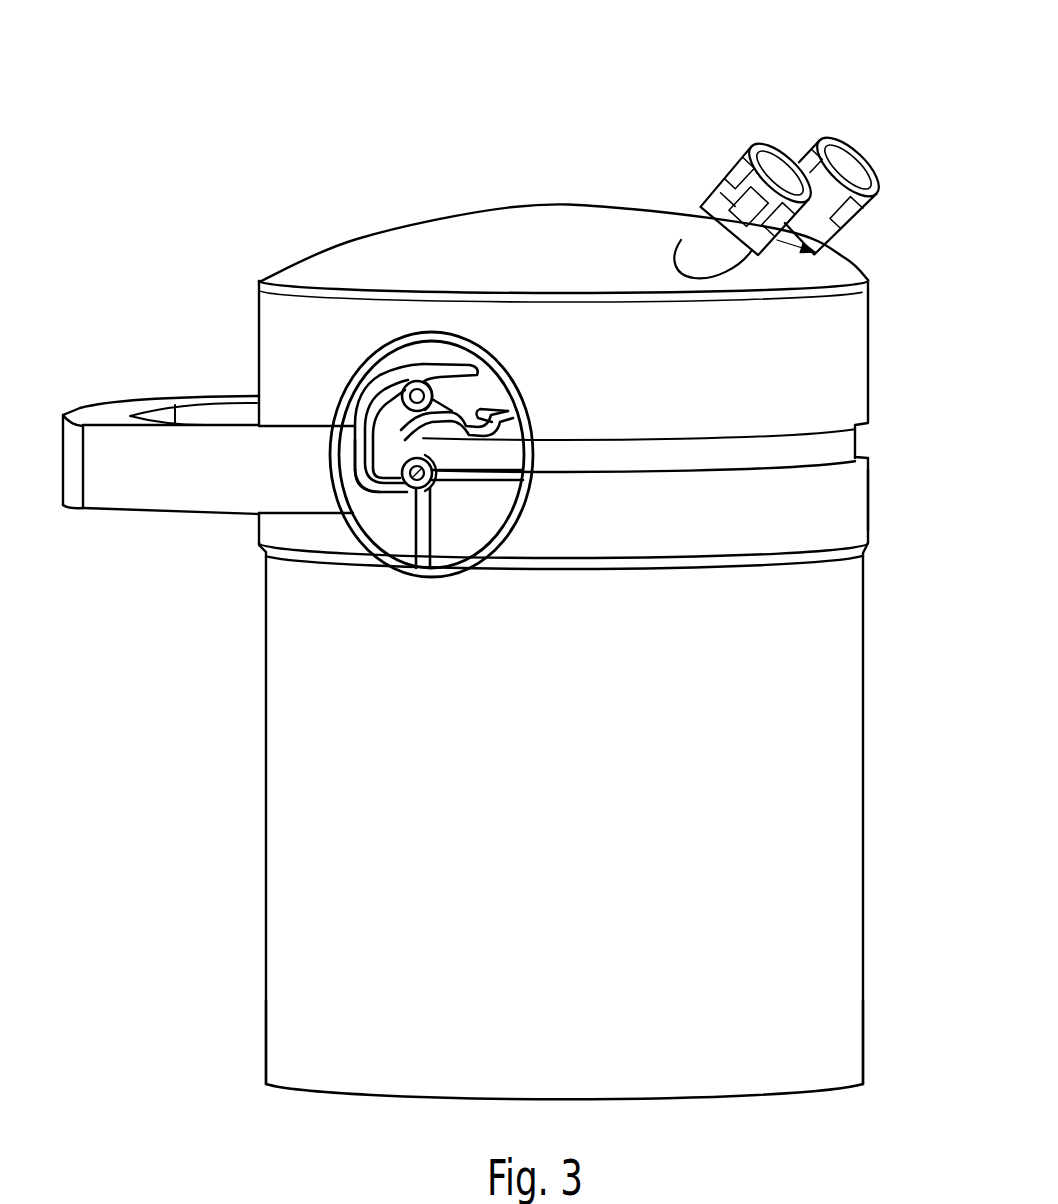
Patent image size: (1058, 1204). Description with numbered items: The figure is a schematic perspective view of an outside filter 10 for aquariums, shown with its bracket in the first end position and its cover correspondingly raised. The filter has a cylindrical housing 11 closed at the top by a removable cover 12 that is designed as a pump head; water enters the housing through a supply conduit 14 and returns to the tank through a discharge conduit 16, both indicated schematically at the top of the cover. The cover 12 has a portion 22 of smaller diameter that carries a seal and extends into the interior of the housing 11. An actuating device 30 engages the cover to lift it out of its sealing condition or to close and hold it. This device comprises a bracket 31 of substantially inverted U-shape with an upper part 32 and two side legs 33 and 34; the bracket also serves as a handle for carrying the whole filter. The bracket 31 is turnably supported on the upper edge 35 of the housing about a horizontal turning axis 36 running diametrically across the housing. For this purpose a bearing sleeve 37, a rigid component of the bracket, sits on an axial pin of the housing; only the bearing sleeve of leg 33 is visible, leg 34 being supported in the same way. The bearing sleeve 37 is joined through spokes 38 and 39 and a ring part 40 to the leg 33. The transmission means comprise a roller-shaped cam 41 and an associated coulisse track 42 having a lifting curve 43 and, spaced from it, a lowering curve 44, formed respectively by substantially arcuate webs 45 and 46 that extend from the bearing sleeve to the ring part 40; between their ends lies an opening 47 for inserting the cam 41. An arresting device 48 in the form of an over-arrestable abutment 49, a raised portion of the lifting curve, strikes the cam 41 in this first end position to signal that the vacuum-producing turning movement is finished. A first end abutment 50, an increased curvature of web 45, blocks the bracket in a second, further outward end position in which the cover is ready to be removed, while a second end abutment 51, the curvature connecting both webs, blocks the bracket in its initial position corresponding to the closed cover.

The outside filter 10 is at (235, 858).
The housing 11 is at (820, 670).
The cover 12 is at (283, 327).
The supply conduit 14 is at (910, 102).
The discharge conduit 16 is at (807, 130).
The portion of smaller diameter 22 is at (837, 443).
The actuating device 30 is at (227, 575).
The bracket 31 is at (127, 395).
The upper part 32 is at (100, 413).
The leg 33 is at (170, 490).
The leg 34 is at (232, 417).
The upper edge 35 is at (833, 500).
The turning axis 36 is at (408, 500).
The bearing sleeve 37 is at (451, 481).
The spoke 38 is at (432, 535).
The spoke 39 is at (482, 489).
The ring part 40 is at (509, 528).
The cam 41 is at (420, 381).
The coulisse track 42 is at (385, 457).
The lifting curve 43 is at (408, 438).
The lowering curve 44 is at (369, 402).
The web 45 is at (428, 473).
The web 46 is at (352, 425).
The opening 47 is at (492, 397).
The arresting device 48 is at (462, 403).
The abutment 49 is at (455, 372).
The first end abutment 50 is at (492, 410).
The second end abutment 51 is at (369, 500).